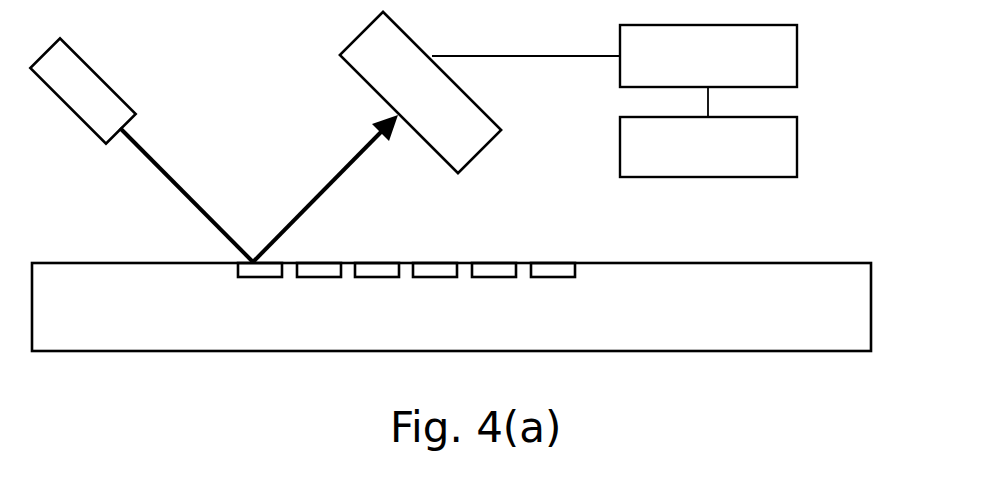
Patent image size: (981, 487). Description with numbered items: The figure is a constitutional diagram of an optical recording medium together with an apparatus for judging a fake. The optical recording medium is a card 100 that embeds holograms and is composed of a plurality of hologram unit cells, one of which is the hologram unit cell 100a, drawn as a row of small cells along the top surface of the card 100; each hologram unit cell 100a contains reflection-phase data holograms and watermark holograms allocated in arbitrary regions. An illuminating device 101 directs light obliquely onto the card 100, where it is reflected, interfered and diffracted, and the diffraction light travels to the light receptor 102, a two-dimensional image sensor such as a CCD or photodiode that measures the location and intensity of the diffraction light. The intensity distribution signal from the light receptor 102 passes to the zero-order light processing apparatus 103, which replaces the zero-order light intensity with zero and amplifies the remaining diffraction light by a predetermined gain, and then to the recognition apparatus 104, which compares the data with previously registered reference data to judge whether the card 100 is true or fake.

The card 100 is at (738, 280).
The hologram unit cell 100a is at (270, 262).
The illuminating device 101 is at (90, 68).
The light receptor 102 is at (370, 88).
The zero-order light processing apparatus 103 is at (797, 60).
The recognition apparatus 104 is at (797, 145).